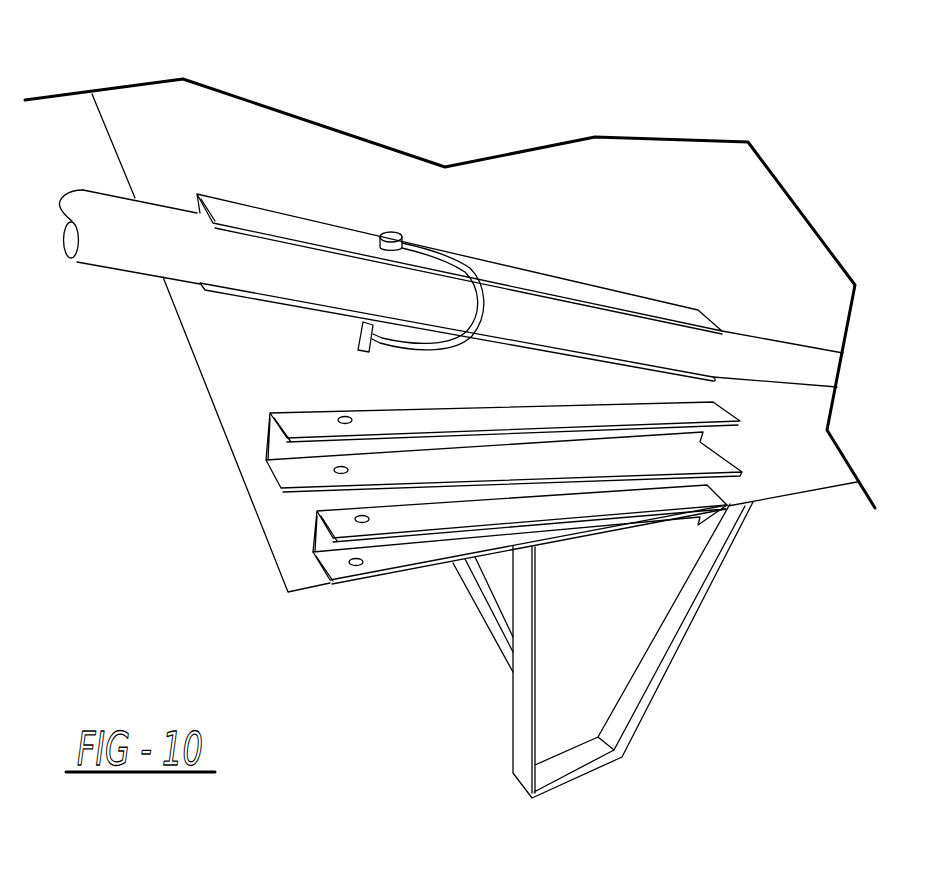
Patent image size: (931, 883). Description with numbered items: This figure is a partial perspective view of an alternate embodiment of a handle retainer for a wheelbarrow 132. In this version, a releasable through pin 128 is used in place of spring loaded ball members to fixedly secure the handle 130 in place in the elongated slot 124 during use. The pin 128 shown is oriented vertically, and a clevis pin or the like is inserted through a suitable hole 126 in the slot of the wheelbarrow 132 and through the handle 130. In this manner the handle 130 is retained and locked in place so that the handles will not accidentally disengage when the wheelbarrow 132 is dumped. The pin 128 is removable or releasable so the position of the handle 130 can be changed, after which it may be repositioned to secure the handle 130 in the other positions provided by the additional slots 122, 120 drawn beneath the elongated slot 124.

The slot 120 is at (446, 574).
The slot 122 is at (433, 429).
The elongated slot 124 is at (229, 214).
The hole 126 is at (348, 412).
The releasable through pin 128 is at (372, 330).
The handle 130 is at (105, 233).
The wheelbarrow 132 is at (322, 573).